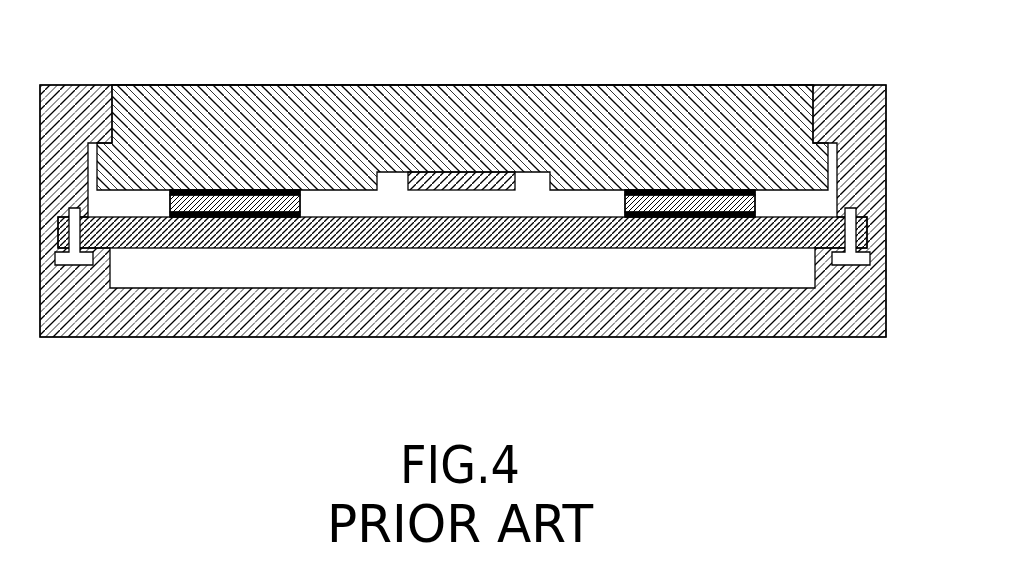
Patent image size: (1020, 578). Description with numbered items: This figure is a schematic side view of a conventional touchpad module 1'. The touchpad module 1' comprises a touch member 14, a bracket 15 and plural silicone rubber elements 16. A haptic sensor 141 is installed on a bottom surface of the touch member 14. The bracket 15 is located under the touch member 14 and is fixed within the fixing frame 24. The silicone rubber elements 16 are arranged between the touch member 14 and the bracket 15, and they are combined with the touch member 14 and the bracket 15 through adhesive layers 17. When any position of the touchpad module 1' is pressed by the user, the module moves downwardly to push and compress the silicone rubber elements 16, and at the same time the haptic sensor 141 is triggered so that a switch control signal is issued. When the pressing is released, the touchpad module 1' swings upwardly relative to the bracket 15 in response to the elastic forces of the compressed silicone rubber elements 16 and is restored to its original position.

The touchpad module 1' is at (460, 206).
The touch member 14 is at (678, 88).
The haptic sensor 141 is at (473, 180).
The bracket 15 is at (330, 228).
The silicone rubber elements 16 is at (217, 187).
The adhesive layers 17 is at (250, 190).
The fixing frame 24 is at (718, 323).